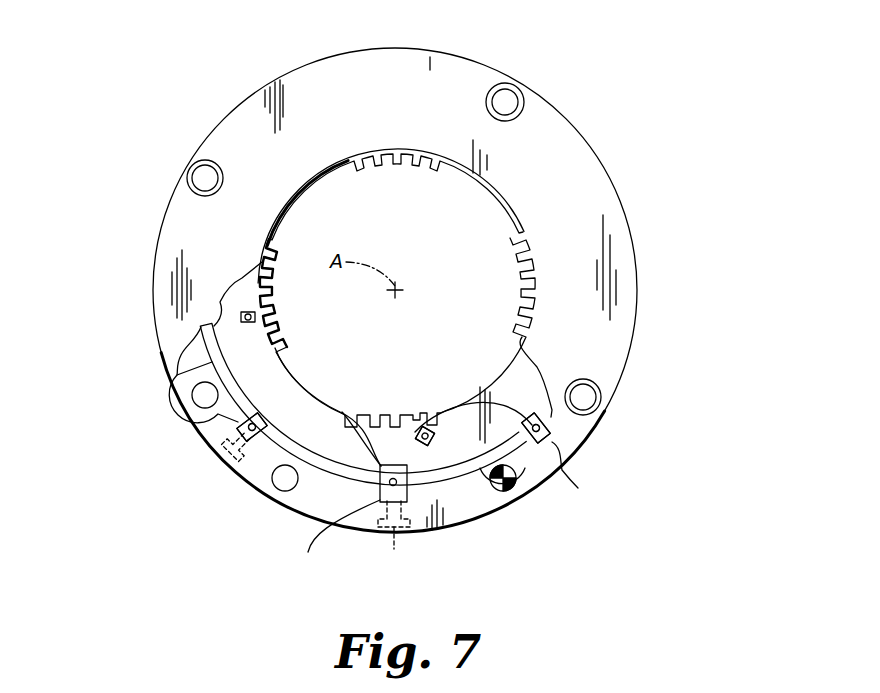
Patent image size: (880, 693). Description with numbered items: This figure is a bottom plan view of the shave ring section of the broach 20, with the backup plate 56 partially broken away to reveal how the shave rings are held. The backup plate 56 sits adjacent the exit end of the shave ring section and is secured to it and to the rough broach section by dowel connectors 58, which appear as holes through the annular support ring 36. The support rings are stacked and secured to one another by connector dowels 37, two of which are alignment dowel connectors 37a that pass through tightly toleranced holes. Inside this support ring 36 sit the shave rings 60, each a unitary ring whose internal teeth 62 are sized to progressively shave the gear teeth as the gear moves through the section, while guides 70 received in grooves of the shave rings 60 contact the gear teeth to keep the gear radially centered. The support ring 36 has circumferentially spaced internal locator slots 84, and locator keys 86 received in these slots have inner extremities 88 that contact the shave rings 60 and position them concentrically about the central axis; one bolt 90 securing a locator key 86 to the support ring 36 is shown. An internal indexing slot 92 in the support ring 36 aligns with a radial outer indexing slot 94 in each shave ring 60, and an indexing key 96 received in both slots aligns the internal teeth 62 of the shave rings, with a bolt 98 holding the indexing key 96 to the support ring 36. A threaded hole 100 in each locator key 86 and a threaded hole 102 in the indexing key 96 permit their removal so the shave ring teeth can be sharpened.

The broach 20 is at (212, 83).
The support ring 36 is at (323, 497).
The connector dowel 37 is at (203, 397).
The alignment dowel connector 37a is at (515, 488).
The backup plate 56 is at (185, 218).
The dowel connector 58 is at (205, 176).
The shave ring 60 is at (228, 353).
The internal teeth 62 is at (271, 283).
The guide 70 is at (240, 314).
The locator slot 84 is at (252, 443).
The locator key 86 is at (238, 418).
The inner extremity 88 is at (258, 424).
The bolt 90 is at (215, 452).
The internal indexing slot 92 is at (338, 536).
The radial outer indexing slot 94 is at (342, 412).
The indexing key 96 is at (407, 474).
The bolt 98 is at (394, 549).
The threaded hole 100 is at (258, 422).
The threaded hole 102 is at (418, 428).